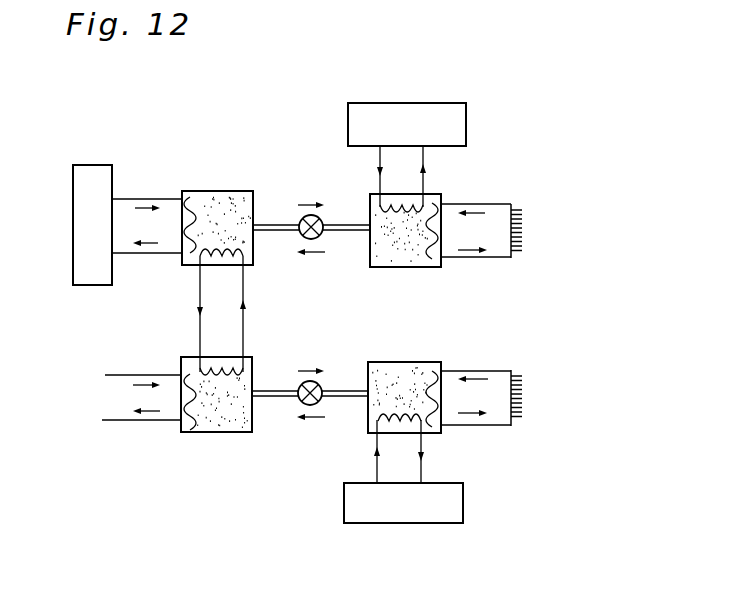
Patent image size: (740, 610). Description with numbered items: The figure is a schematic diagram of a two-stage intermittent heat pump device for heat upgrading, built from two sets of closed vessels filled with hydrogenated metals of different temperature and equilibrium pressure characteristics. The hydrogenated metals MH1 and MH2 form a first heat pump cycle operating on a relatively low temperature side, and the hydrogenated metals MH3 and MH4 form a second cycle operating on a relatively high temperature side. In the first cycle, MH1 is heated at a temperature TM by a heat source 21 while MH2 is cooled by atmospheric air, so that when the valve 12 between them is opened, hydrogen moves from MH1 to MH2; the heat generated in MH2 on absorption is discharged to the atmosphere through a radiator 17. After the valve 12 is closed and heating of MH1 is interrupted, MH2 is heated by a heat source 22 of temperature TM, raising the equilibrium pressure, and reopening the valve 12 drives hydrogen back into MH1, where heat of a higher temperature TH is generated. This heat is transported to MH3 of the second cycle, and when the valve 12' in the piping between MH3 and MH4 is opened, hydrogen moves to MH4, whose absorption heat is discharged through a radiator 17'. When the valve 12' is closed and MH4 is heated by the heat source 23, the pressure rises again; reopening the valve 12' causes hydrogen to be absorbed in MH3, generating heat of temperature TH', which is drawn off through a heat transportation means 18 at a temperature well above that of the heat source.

The heat source 21 is at (95, 170).
The hydrogenated metal MH1 is at (220, 197).
The heat source 22 is at (442, 117).
The valve 12 is at (311, 212).
The hydrogenated metal MH2 is at (435, 195).
The radiator 17 is at (515, 231).
The heat transportation means 18 is at (125, 397).
The hydrogenated metal MH3 is at (215, 422).
The valve 12' is at (310, 377).
The hydrogenated metal MH4 is at (372, 408).
The radiator 17' is at (515, 398).
The heat source 23 is at (415, 510).